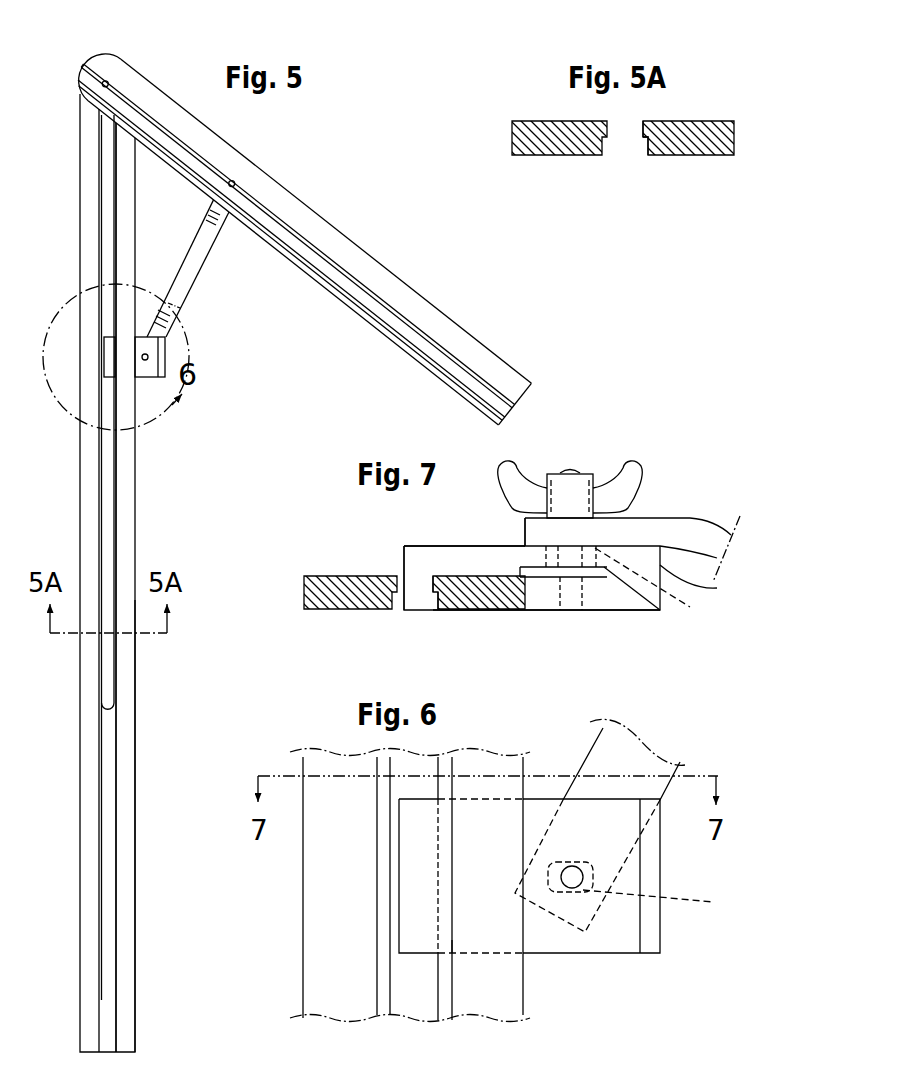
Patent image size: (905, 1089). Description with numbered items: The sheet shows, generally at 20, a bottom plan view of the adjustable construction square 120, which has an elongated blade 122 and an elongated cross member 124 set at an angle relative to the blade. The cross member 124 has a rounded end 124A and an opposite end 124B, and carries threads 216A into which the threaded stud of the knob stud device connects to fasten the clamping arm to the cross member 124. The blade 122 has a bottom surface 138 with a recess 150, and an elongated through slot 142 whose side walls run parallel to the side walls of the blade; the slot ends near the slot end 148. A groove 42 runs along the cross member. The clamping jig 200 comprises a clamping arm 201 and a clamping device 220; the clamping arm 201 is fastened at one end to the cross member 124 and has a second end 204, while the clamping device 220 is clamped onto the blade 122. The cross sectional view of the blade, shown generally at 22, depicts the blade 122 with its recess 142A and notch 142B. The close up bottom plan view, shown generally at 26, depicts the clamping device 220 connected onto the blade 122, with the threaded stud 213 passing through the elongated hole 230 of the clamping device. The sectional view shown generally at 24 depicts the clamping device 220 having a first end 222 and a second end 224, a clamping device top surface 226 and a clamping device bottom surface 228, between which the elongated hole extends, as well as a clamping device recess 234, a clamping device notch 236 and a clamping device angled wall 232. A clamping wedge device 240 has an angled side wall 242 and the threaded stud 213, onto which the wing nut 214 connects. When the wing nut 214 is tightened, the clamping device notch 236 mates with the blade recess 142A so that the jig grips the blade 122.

In FIG. 5, the bottom plan view of adjustable construction square 20 is at (136, 54).
In FIG. 5A, the cross sectional view of blade 22 is at (709, 105).
In FIG. 5, the cross sectional view of blade with clamping jig 24 is at (650, 420).
In FIG. 6, the bracket assembly 26 is at (643, 995).
In FIG. 5, the groove 42 is at (80, 82).
In FIG. 5, the adjustable construction square 120 is at (80, 740).
In FIG. 5, the blade 122 is at (80, 892).
In FIG. 5A, the blade 122 is at (510, 140).
In FIG. 7, the blade 122 is at (320, 613).
In FIG. 6, the blade 122 is at (302, 950).
In FIG. 5, the cross member 124 is at (383, 266).
In FIG. 5, the rounded end 124A is at (100, 54).
In FIG. 5, the arm end 124B is at (534, 394).
In FIG. 5, the bottom surface 138 is at (130, 835).
In FIG. 5, the elongated through slot 142 is at (130, 510).
In FIG. 6, the elongated through slot 142 is at (393, 1012).
In FIG. 5A, the blade recess 142A is at (646, 145).
In FIG. 7, the blade recess 142A is at (437, 597).
In FIG. 6, the blade recess 142A is at (453, 1005).
In FIG. 5A, the blade notch 142B is at (642, 128).
In FIG. 7, the blade notch 142B is at (433, 585).
In FIG. 6, the blade notch 142B is at (437, 998).
In FIG. 5, the slot 148 is at (113, 700).
In FIG. 5, the recess 150 is at (108, 750).
In FIG. 5, the clamping jig 200 is at (201, 273).
In FIG. 7, the clamping jig 200 is at (652, 517).
In FIG. 6, the clamping jig 200 is at (668, 790).
In FIG. 5, the clamping arm 201 is at (178, 306).
In FIG. 7, the clamping arm 201 is at (703, 520).
In FIG. 7, the second end 204 is at (525, 527).
In FIG. 5, the threaded stud 213 is at (147, 360).
In FIG. 7, the threaded stud 213 is at (571, 467).
In FIG. 6, the threaded stud 213 is at (581, 874).
In FIG. 7, the wing nut 214 is at (647, 470).
In FIG. 5, the threads 216A is at (235, 183).
In FIG. 5, the clamping device 220 is at (168, 350).
In FIG. 7, the clamping device 220 is at (448, 543).
In FIG. 6, the clamping device 220 is at (662, 930).
In FIG. 7, the first end 222 is at (717, 588).
In FIG. 7, the second end 224 is at (403, 562).
In FIG. 7, the clamping device top surface 226 is at (417, 543).
In FIG. 7, the clamping device bottom surface 228 is at (650, 612).
In FIG. 7, the elongated hole 230 is at (666, 584).
In FIG. 6, the elongated hole 230 is at (670, 905).
In FIG. 7, the clamping device angled wall 232 is at (620, 588).
In FIG. 7, the clamping device recess 234 is at (462, 613).
In FIG. 7, the clamping device notch 236 is at (445, 603).
In FIG. 6, the clamping device notch 236 is at (452, 940).
In FIG. 7, the clamping wedge device 240 is at (593, 615).
In FIG. 7, the angled side wall 242 is at (645, 600).